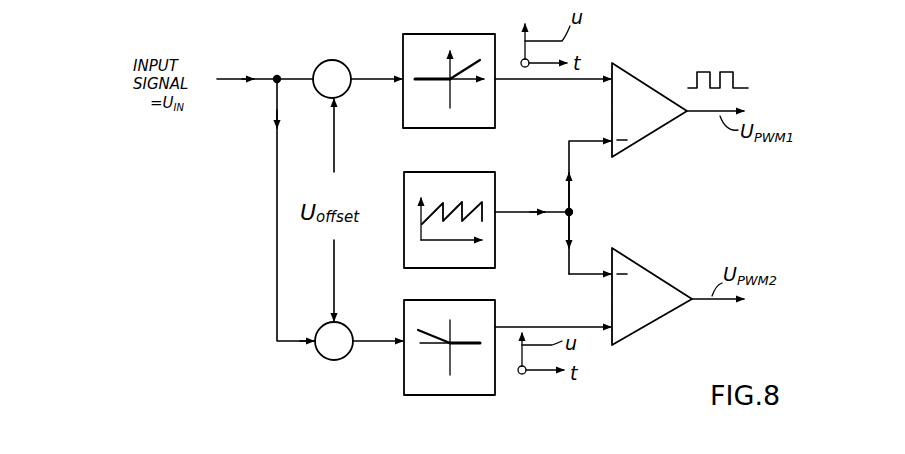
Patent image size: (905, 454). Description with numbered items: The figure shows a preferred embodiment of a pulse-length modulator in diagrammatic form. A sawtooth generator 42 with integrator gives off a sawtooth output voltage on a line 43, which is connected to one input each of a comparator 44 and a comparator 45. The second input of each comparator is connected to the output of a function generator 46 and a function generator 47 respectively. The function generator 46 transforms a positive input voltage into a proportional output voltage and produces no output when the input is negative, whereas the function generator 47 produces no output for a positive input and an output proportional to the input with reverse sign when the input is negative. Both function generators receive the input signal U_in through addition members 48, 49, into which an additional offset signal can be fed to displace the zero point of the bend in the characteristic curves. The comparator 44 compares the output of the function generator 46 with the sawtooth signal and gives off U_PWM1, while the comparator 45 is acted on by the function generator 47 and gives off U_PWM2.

The sawtooth generator 42 is at (404, 254).
The line 43 is at (516, 214).
The comparator 44 is at (651, 128).
The comparator 45 is at (650, 276).
The function generator 46 is at (446, 34).
The function generator 47 is at (455, 395).
The addition member 48 is at (334, 61).
The addition member 49 is at (331, 361).